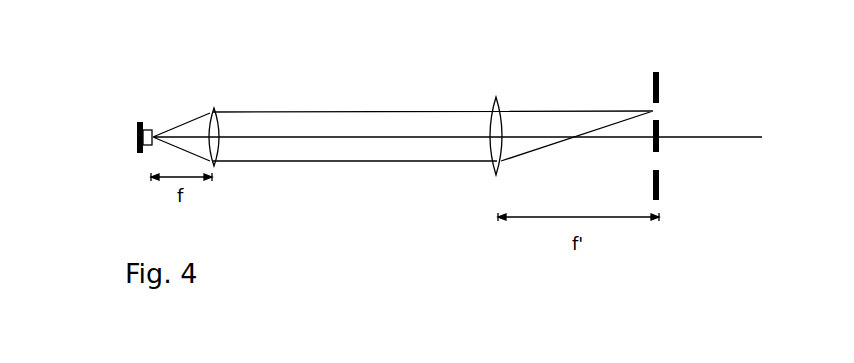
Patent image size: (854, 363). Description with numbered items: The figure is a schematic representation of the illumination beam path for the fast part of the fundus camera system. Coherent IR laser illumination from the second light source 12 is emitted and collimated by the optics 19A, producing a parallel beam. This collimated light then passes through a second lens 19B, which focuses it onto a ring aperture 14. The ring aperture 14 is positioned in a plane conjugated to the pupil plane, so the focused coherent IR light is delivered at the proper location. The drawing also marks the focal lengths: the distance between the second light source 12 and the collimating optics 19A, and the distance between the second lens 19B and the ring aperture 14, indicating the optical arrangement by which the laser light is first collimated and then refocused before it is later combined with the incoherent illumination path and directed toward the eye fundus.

The second light source 12 is at (137, 131).
The collimating optics 19A is at (221, 108).
The second lens 19B is at (510, 100).
The ring aperture 14 is at (670, 78).